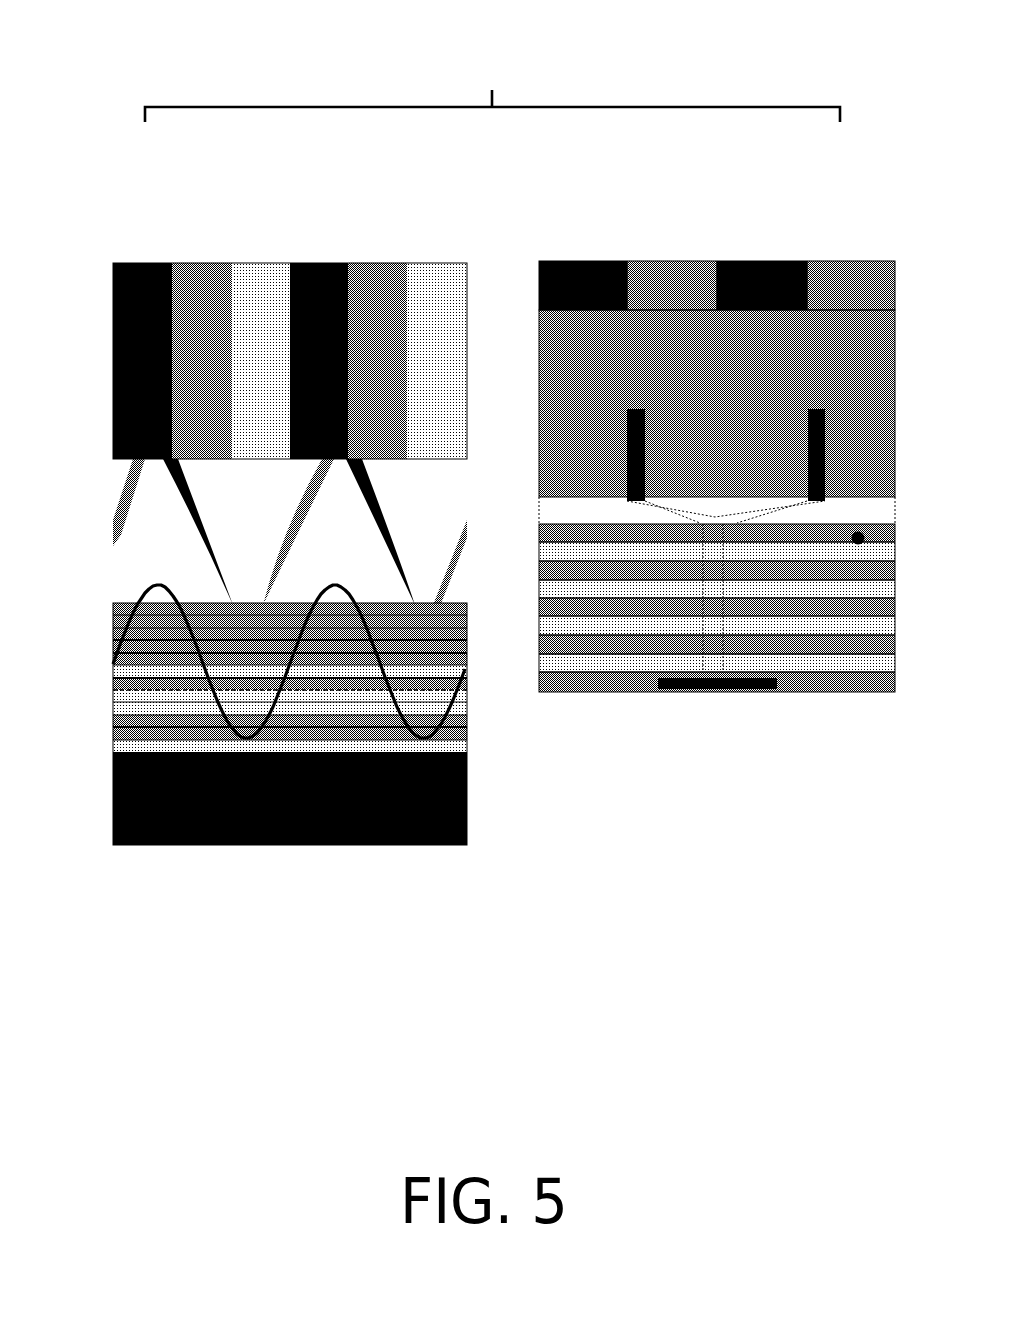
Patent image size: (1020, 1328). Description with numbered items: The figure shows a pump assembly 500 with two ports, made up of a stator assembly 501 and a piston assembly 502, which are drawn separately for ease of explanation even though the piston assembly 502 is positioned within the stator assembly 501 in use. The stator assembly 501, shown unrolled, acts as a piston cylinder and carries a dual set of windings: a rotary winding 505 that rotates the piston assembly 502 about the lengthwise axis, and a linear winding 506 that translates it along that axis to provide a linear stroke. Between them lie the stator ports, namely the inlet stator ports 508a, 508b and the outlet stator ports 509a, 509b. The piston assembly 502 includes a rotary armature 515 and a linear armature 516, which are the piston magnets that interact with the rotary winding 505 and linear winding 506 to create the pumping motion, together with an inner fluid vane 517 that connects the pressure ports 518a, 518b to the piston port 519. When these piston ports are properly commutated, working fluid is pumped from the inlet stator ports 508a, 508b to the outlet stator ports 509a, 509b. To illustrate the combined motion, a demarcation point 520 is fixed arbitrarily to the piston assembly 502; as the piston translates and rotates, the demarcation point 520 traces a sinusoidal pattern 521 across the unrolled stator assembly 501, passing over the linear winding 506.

The pump assembly 500 is at (512, 82).
The stator assembly 501 is at (290, 214).
The piston assembly 502 is at (731, 212).
The rotary winding 505 is at (106, 337).
The linear winding 506 is at (105, 736).
The inlet stator port 508a is at (134, 522).
The inlet stator port 508b is at (321, 519).
The outlet stator port 509a is at (202, 500).
The outlet stator port 509b is at (390, 500).
The rotary armature 515 is at (603, 255).
The linear armature 516 is at (903, 615).
The inner fluid vane 517 is at (758, 508).
The pressure port 518a is at (651, 431).
The pressure port 518b is at (834, 427).
The piston port 519 is at (743, 697).
The demarcation point 520 is at (874, 544).
The pattern 521 is at (443, 734).